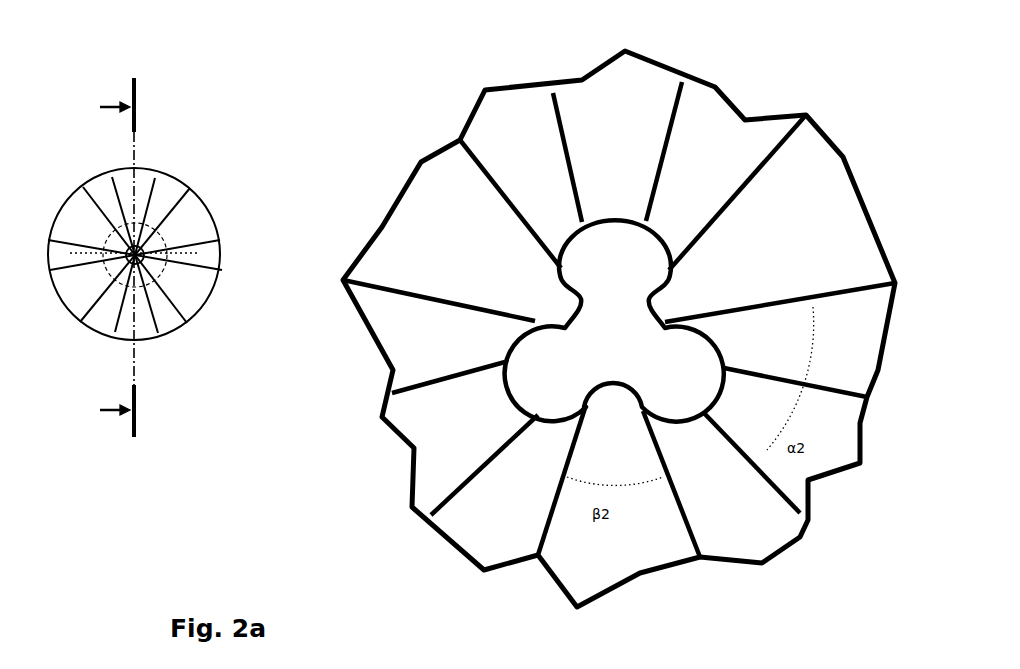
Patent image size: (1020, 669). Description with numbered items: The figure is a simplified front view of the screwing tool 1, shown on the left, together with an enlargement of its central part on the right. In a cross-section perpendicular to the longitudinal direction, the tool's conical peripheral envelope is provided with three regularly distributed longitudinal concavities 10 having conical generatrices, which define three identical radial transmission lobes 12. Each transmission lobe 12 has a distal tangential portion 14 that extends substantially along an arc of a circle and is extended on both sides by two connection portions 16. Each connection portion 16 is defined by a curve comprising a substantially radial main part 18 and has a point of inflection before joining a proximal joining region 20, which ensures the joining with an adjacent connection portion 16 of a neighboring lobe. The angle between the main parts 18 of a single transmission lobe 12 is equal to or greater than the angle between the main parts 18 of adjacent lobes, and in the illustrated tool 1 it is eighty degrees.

The screwing tool 1 is at (174, 387).
The longitudinal concavity 10 is at (189, 232).
The radial transmission lobe 12 is at (63, 302).
The distal tangential portion 14 is at (610, 222).
The connection portion 16 is at (575, 252).
The main part 18 is at (565, 281).
The proximal joining region 20 is at (581, 300).